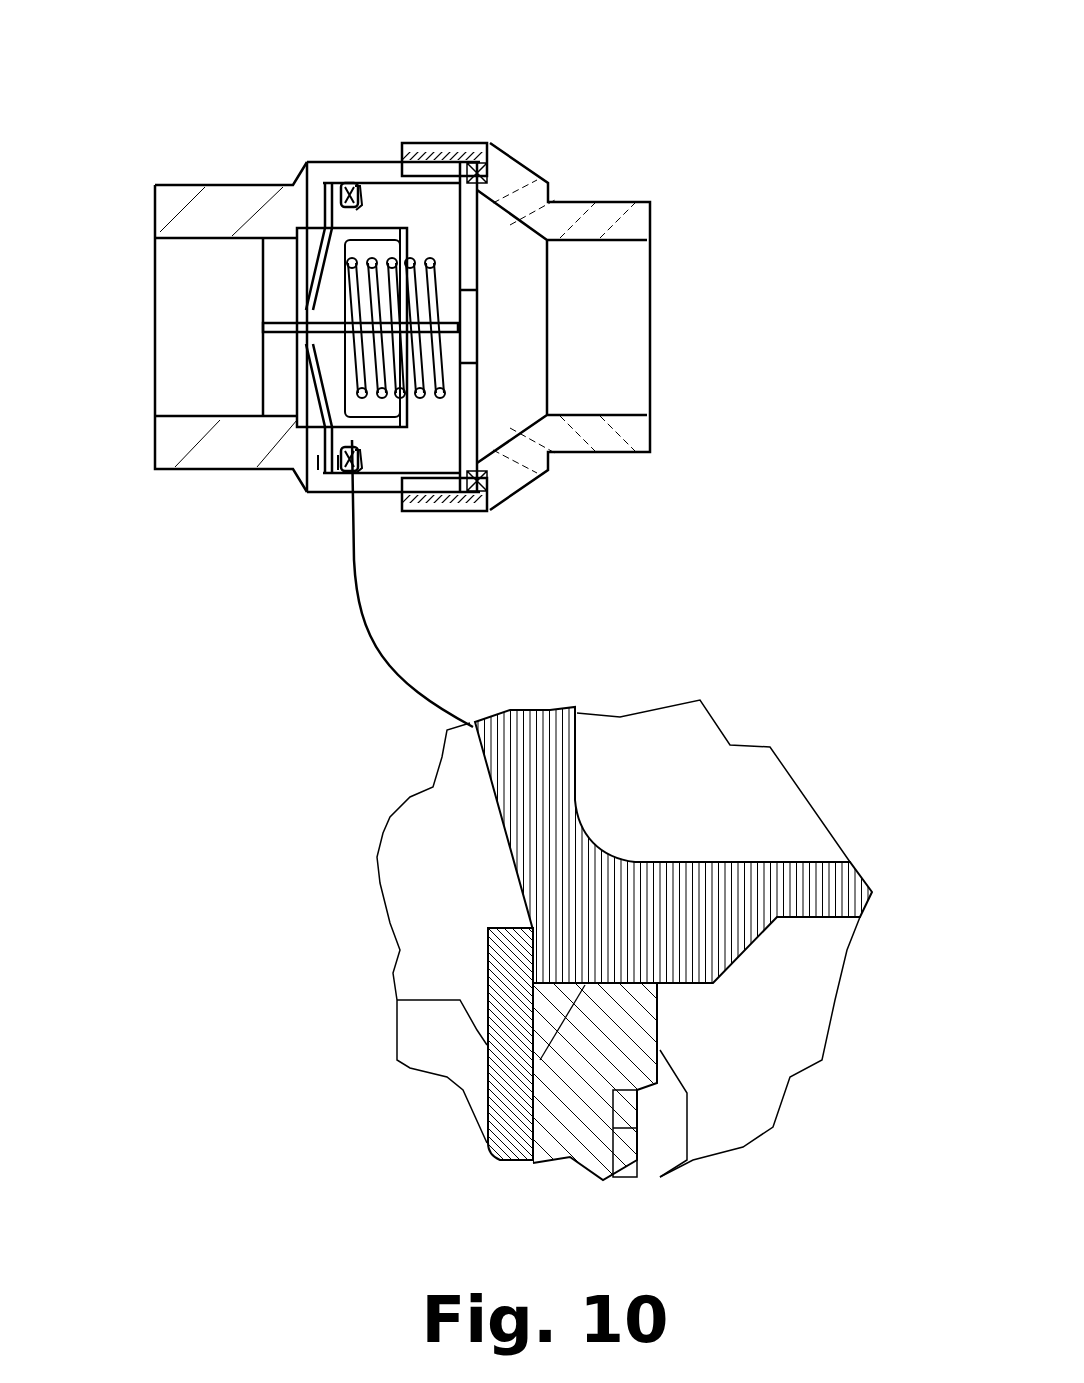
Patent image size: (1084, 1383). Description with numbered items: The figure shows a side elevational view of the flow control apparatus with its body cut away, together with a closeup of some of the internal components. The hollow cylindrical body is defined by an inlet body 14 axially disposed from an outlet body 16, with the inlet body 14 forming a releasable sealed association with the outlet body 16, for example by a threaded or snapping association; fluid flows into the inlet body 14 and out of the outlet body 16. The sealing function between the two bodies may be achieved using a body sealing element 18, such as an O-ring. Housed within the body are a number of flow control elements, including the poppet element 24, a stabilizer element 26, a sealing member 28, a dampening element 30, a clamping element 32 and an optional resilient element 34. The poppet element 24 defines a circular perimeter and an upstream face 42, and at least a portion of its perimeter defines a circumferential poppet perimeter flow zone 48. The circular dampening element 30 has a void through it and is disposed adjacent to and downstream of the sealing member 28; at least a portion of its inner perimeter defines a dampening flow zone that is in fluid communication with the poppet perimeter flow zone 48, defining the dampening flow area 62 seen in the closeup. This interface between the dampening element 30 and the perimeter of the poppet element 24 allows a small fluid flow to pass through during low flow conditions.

The inlet body 14 is at (163, 203).
The outlet body 16 is at (623, 205).
The body sealing element 18 is at (480, 485).
The poppet element 24 is at (340, 353).
The stabilizer element 26 is at (275, 328).
The sealing member 28 is at (327, 197).
The dampening element 30 is at (347, 185).
The clamping element 32 is at (355, 190).
The resilient element 34 is at (423, 397).
The upstream face 42 is at (505, 912).
The poppet perimeter flow zone 48 is at (692, 999).
The dampening flow area 62 is at (312, 466).